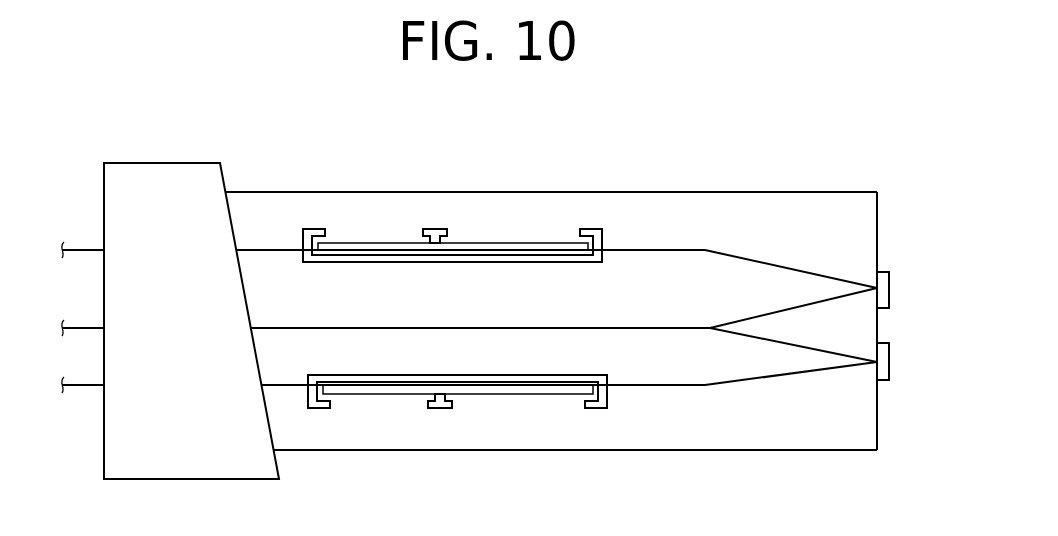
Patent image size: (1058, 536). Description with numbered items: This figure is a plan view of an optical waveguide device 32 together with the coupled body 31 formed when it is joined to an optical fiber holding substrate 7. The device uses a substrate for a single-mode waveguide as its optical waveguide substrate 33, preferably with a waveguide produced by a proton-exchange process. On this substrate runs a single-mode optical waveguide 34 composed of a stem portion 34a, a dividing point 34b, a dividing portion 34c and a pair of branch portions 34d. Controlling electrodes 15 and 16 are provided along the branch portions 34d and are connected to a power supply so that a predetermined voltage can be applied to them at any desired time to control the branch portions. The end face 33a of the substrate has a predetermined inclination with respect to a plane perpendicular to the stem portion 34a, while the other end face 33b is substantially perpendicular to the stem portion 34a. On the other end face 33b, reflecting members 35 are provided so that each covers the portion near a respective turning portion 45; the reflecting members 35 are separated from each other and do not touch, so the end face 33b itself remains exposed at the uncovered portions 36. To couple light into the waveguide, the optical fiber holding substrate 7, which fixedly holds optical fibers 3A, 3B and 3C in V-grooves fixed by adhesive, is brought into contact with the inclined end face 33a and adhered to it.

The optical fiber holding substrate 7 is at (173, 183).
The optical fiber 3A is at (80, 328).
The optical fiber 3B is at (80, 250).
The optical fiber 3C is at (80, 385).
The controlling electrode 15 is at (455, 273).
The controlling electrode 16 is at (345, 250).
The coupled body 31 is at (519, 189).
The optical waveguide device 32 is at (448, 189).
The optical waveguide substrate 33 is at (272, 210).
The end face 33a is at (247, 314).
The other end face 33b is at (879, 203).
The optical waveguide 34 is at (713, 244).
The stem portion 34a is at (470, 327).
The dividing point 34b is at (712, 333).
The dividing portion 34c is at (784, 268).
The branch portion 34d is at (662, 250).
The reflecting member 35 is at (890, 300).
The uncovered portion 36 is at (879, 232).
The turning portion 45 is at (891, 285).